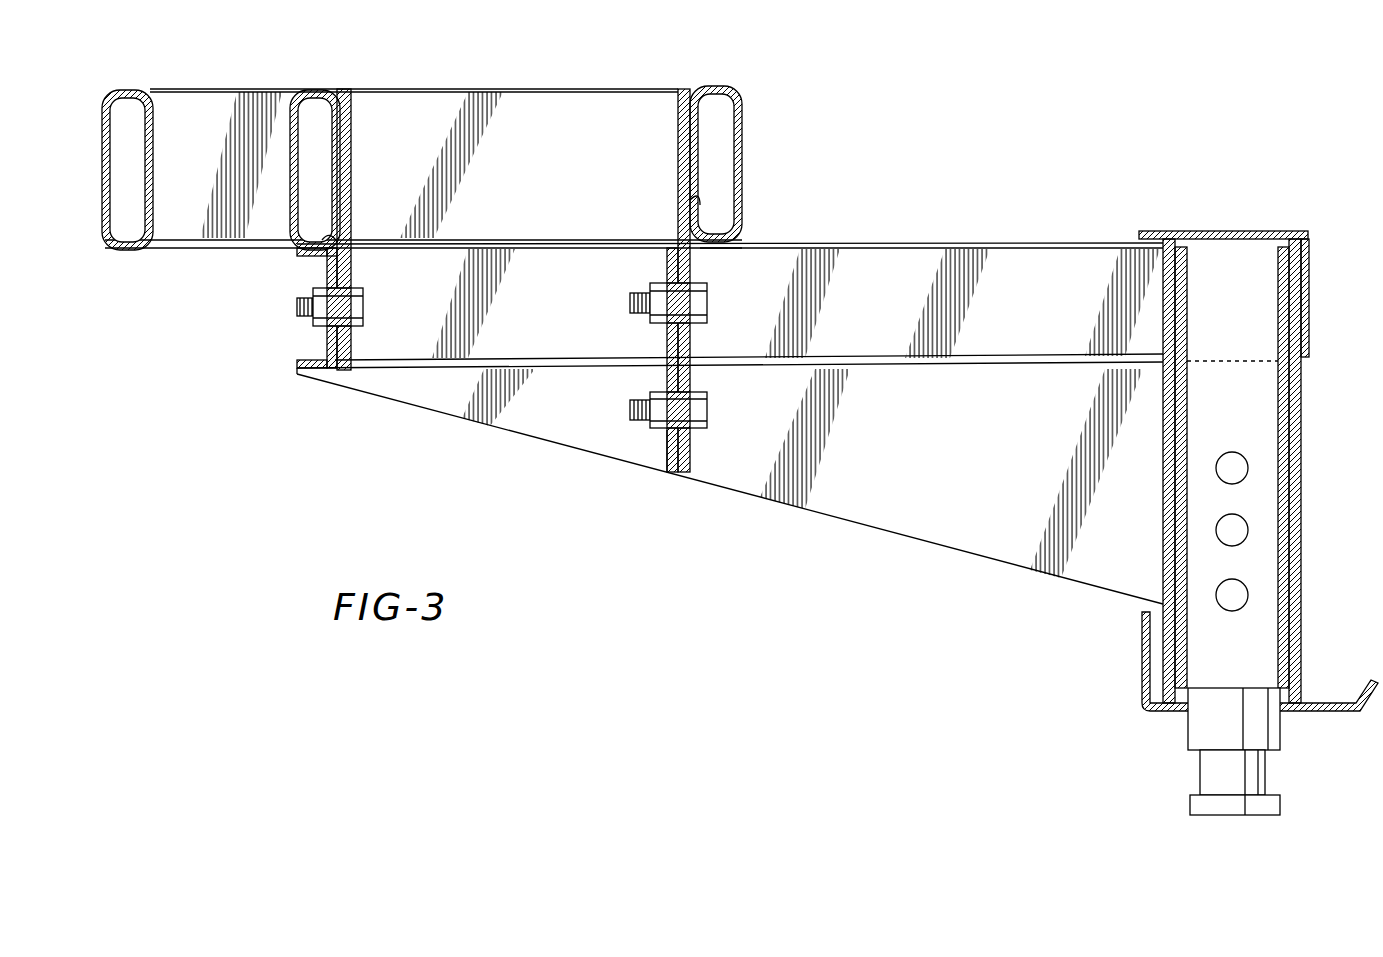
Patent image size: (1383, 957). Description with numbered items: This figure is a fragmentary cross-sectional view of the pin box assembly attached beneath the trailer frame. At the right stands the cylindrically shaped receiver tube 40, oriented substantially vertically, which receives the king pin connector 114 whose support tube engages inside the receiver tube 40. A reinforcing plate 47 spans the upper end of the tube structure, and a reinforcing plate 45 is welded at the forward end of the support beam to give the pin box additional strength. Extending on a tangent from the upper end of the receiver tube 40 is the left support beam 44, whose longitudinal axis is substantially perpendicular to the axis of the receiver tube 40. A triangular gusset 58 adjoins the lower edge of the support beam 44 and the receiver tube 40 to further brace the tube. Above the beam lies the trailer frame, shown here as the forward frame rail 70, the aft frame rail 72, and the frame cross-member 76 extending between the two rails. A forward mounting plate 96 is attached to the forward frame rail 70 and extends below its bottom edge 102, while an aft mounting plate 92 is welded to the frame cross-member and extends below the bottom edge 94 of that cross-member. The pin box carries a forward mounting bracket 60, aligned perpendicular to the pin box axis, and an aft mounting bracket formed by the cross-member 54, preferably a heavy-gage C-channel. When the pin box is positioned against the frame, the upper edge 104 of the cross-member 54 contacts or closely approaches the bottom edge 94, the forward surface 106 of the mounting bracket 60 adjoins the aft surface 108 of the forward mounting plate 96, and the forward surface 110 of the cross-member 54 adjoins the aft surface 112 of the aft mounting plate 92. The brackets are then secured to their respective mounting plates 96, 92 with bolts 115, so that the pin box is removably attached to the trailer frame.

The receiver tube 40 is at (1302, 493).
The left support beam 44 is at (1040, 262).
The reinforcing plate 45 is at (1310, 298).
The reinforcing plate 47 is at (1268, 231).
The cross-member 54 is at (300, 356).
The gusset 58 is at (965, 530).
The forward mounting bracket 60 is at (667, 447).
The forward frame rail 70 is at (742, 122).
The aft frame rail 72 is at (156, 150).
The cross-member 76 is at (535, 90).
The mounting plate 92 is at (351, 140).
The bottom edge 94 is at (330, 252).
The forward mounting plate 96 is at (700, 196).
The bottom edge 102 is at (720, 258).
The upper edge 104 is at (348, 252).
The forward surface 106 is at (705, 462).
The aft surface 108 is at (680, 150).
The forward surface 110 is at (362, 355).
The aft surface 112 is at (326, 224).
The king pin connector 114 is at (1178, 731).
The bolts 115 is at (365, 312).